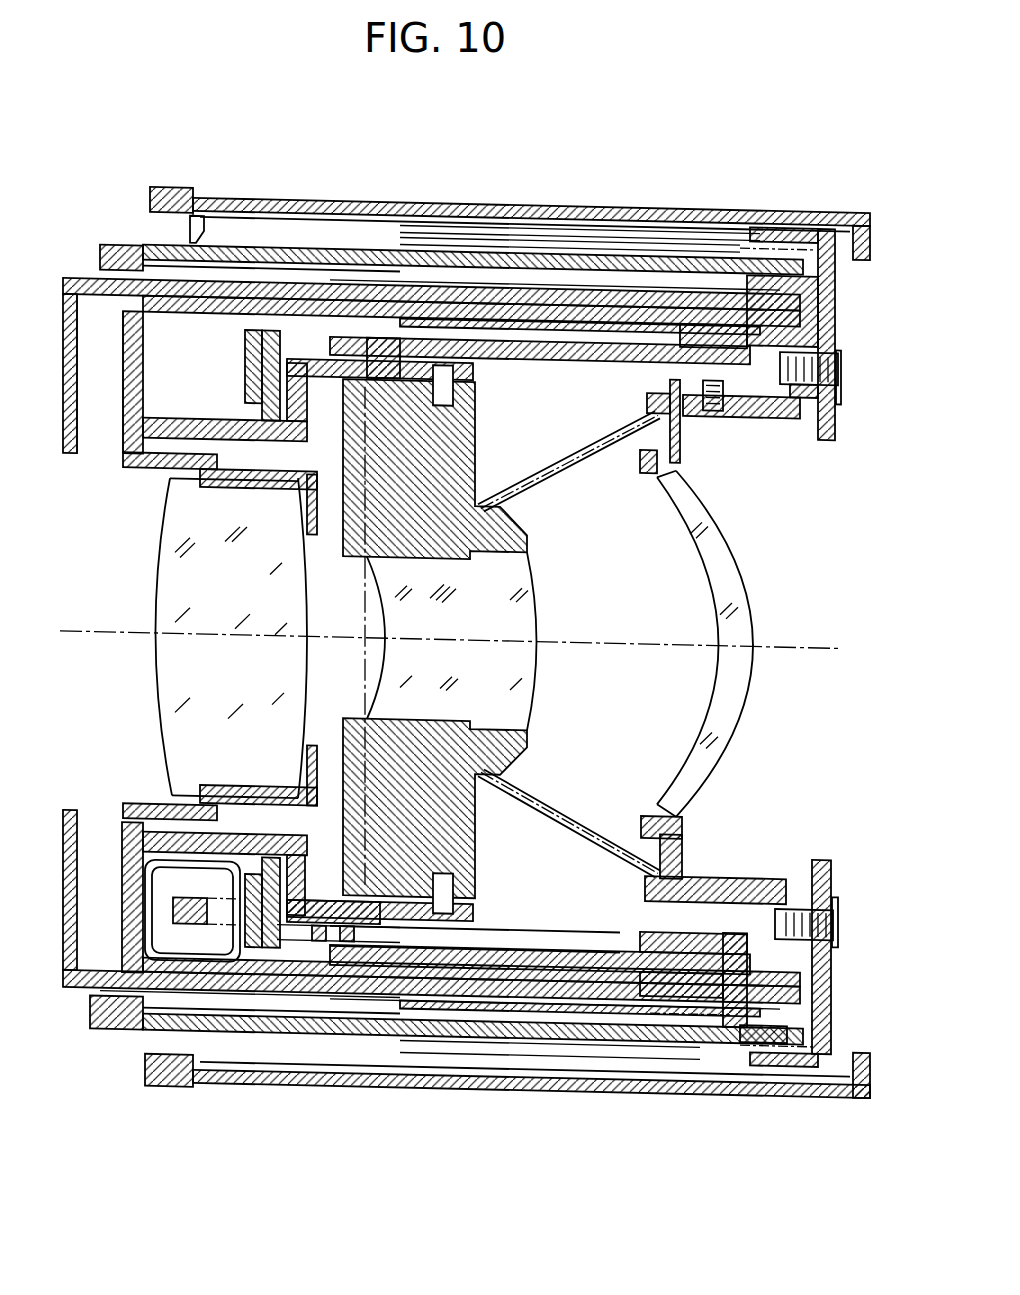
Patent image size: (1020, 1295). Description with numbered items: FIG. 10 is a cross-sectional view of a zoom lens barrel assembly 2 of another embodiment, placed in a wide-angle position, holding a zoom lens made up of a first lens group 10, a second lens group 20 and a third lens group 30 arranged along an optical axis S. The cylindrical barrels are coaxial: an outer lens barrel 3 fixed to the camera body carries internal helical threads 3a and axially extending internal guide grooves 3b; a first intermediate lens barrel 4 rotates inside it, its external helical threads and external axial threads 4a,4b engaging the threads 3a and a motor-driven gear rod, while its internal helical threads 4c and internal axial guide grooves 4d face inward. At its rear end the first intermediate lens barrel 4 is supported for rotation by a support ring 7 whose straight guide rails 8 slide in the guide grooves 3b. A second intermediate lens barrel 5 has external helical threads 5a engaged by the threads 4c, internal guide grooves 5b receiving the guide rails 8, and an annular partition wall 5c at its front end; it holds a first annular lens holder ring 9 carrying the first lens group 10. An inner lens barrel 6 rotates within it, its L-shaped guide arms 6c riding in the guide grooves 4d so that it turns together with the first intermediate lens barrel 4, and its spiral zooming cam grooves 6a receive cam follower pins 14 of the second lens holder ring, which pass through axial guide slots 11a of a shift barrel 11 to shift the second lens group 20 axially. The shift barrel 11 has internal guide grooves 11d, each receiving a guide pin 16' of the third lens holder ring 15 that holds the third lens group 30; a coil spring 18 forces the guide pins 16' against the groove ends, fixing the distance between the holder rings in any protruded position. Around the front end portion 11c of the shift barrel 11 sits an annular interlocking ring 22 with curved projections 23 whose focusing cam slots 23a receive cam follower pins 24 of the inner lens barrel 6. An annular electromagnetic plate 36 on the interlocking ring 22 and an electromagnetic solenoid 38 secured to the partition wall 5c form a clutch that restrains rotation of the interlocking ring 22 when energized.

The zoom lens barrel assembly 2 is at (385, 196).
The outer lens barrel 3 is at (808, 215).
The internal helical threads 3a is at (622, 243).
The internal guide grooves 3b is at (594, 222).
The first intermediate lens barrel 4 is at (540, 268).
The external helical threads and external axial threads 4a,4b is at (740, 247).
The internal helical threads 4c is at (468, 275).
The internal axial guide grooves 4d is at (836, 298).
The second intermediate lens barrel 5 is at (157, 290).
The external helical threads 5a is at (655, 1017).
The internal guide grooves 5b is at (133, 316).
The annular partition wall 5c is at (165, 890).
The inner lens barrel 6 is at (677, 327).
The zooming internal cam grooves 6a is at (560, 365).
The L-shaped guide arms 6c is at (777, 277).
The support ring 7 is at (840, 333).
The straight guide rails 8 is at (243, 303).
The first annular lens holder ring 9 is at (300, 475).
The first lens group 10 is at (146, 626).
The shift barrel 11 is at (690, 939).
The axial guide slots 11a is at (560, 937).
The front end portion 11c is at (172, 438).
The internal guide grooves 11d is at (660, 357).
The cam follower pins 14 is at (442, 905).
The third lens holder ring 15 is at (776, 414).
The guide pin 16' is at (723, 423).
The coil spring 18 is at (577, 835).
The second lens group 20 is at (557, 630).
The annular interlocking ring 22 is at (278, 333).
The curved projections 23 is at (300, 950).
The focusing cam slot 23a is at (345, 950).
The cam follower pins 24 is at (314, 905).
The third lens group 30 is at (735, 605).
The annular electromagnetic plate 36 is at (245, 352).
The electromagnetic solenoid 38 is at (160, 945).
The optical axis S is at (797, 653).